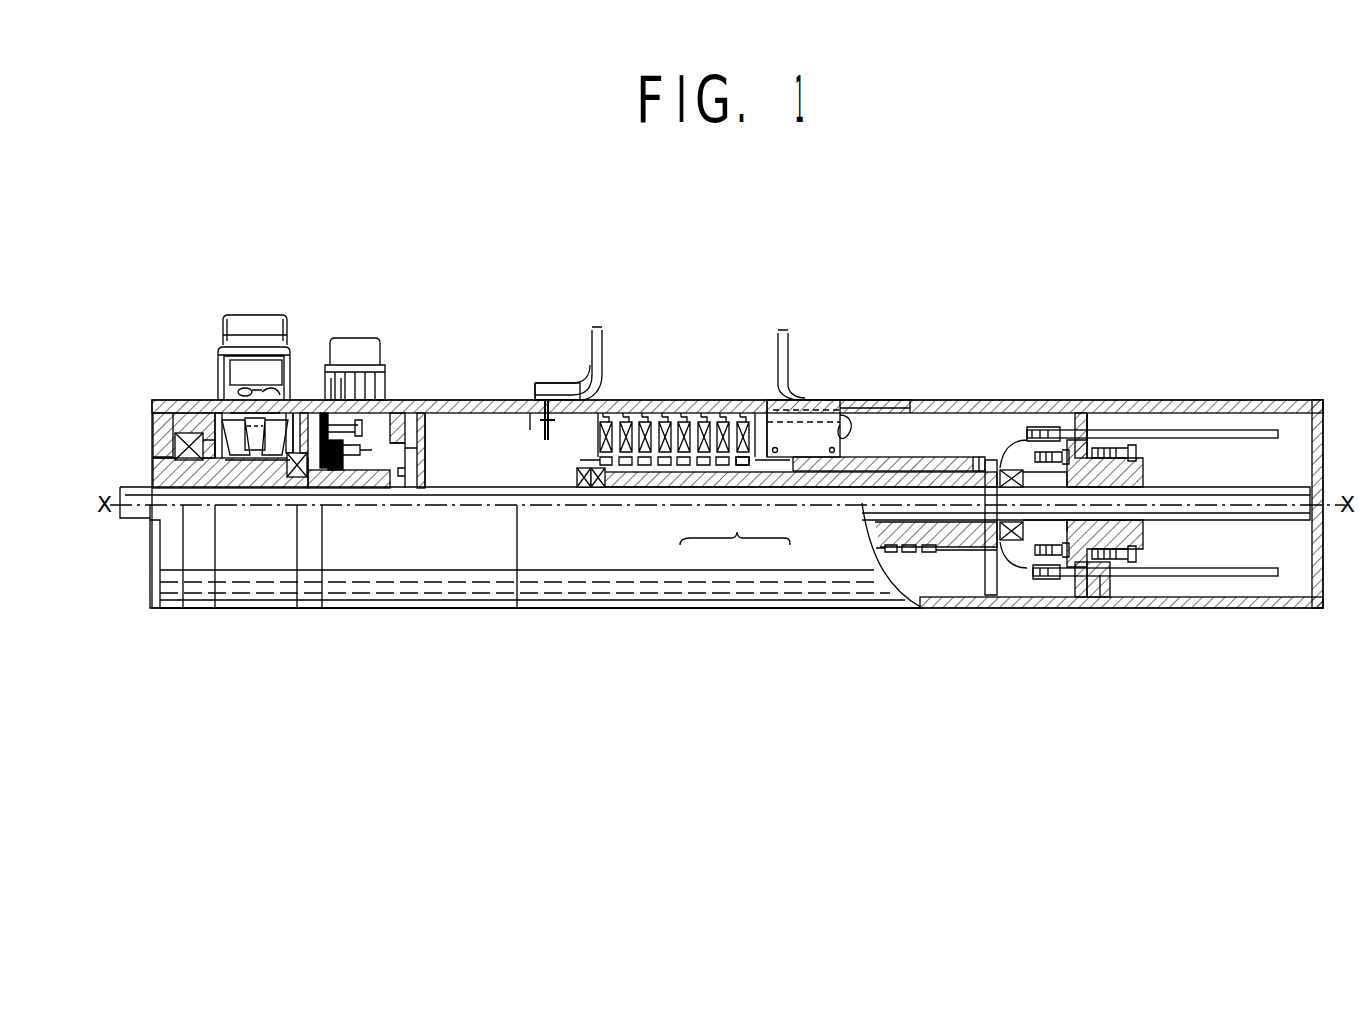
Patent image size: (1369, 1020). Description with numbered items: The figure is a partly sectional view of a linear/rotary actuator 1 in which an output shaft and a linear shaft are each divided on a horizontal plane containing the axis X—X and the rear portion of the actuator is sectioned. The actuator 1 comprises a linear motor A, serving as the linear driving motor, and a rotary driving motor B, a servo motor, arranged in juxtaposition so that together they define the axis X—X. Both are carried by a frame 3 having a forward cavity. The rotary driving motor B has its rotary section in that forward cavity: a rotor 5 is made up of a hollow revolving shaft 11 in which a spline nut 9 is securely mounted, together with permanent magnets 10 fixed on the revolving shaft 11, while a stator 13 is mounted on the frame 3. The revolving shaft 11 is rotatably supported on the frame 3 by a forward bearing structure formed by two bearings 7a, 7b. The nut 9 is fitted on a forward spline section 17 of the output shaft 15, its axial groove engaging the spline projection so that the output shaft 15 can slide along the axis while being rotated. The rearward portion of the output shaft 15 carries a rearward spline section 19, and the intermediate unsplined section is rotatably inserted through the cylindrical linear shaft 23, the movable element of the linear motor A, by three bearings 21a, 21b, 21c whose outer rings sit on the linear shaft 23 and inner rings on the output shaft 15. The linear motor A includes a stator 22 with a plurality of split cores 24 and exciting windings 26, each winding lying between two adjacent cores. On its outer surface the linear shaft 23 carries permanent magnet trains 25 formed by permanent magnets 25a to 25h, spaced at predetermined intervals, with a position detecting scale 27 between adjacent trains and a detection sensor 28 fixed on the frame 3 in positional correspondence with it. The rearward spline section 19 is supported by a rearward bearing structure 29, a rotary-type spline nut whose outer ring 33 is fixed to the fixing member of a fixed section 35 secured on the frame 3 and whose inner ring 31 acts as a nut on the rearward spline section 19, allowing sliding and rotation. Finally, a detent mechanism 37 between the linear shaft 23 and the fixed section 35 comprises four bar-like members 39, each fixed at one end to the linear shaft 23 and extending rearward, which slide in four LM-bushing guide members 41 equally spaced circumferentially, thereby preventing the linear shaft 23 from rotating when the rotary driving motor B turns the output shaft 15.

The linear/rotary actuator 1 is at (853, 298).
The frame 3 is at (440, 402).
The rotor 5 is at (262, 470).
The bearing 7a is at (176, 432).
The bearing 7b is at (296, 478).
The spline nut 9 is at (190, 475).
The permanent magnets 10 is at (255, 448).
The revolving shaft 11 is at (178, 470).
The stator 13 is at (300, 418).
The output shaft 15 is at (440, 490).
The forward spline section 17 is at (230, 470).
The rearward spline section 19 is at (1258, 600).
The bearing 21a is at (594, 490).
The bearing 21b is at (608, 490).
The bearing 21c is at (998, 545).
The stator 22 is at (657, 418).
The linear shaft 23 is at (818, 490).
The split cores 24 is at (638, 420).
The permanent magnet trains 25 is at (960, 638).
The permanent magnet 25a is at (592, 455).
The permanent magnet 25h is at (757, 462).
The exciting windings 26 is at (598, 432).
The position detecting scale 27 is at (943, 460).
The detection sensor 28 is at (835, 440).
The rearward bearing structure 29 is at (1138, 452).
The inner ring 31 is at (1150, 483).
The outer ring 33 is at (1128, 466).
The fixed section 35 is at (1080, 378).
The detent mechanism 37 is at (1100, 420).
The bar-like members 39 is at (1220, 432).
The guide members 41 is at (1093, 415).
The linear motor A is at (722, 305).
The rotary driving motor B is at (290, 298).